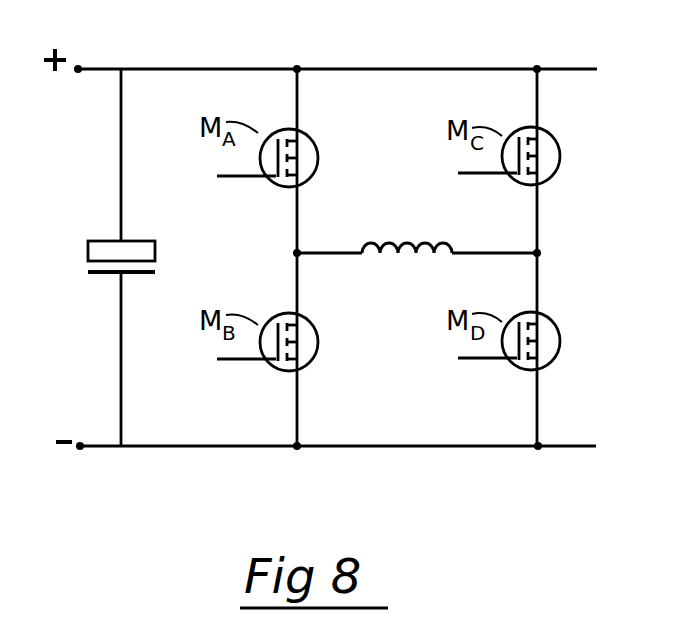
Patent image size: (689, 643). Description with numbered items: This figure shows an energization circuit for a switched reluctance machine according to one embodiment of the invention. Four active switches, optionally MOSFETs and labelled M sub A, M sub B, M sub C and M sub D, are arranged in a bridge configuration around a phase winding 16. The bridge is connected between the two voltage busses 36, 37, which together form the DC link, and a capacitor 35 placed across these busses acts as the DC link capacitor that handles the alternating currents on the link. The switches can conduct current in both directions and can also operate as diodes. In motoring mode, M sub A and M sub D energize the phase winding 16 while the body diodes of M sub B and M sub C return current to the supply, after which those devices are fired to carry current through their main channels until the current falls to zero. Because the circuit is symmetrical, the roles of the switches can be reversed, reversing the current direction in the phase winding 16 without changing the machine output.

The phase winding 16 is at (385, 233).
The capacitor 35 is at (84, 262).
The voltage bus 36 is at (202, 68).
The voltage bus 37 is at (180, 448).